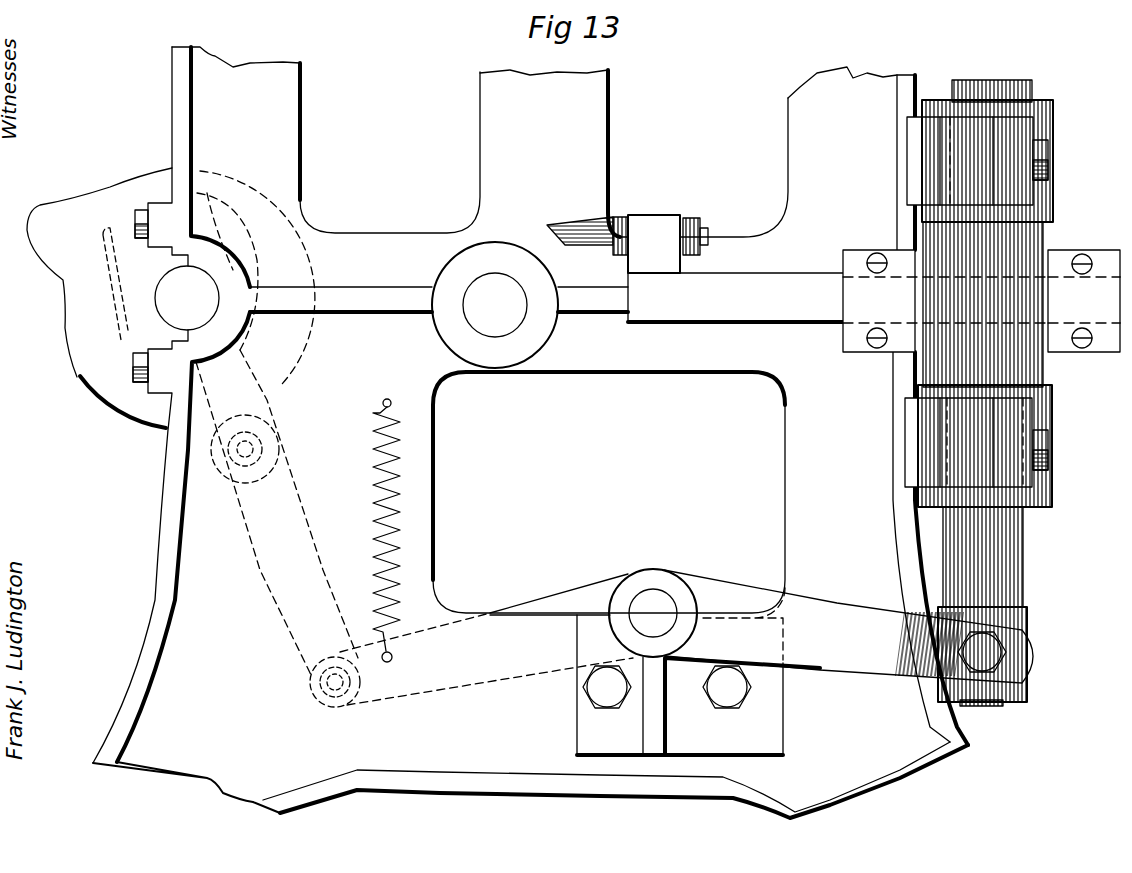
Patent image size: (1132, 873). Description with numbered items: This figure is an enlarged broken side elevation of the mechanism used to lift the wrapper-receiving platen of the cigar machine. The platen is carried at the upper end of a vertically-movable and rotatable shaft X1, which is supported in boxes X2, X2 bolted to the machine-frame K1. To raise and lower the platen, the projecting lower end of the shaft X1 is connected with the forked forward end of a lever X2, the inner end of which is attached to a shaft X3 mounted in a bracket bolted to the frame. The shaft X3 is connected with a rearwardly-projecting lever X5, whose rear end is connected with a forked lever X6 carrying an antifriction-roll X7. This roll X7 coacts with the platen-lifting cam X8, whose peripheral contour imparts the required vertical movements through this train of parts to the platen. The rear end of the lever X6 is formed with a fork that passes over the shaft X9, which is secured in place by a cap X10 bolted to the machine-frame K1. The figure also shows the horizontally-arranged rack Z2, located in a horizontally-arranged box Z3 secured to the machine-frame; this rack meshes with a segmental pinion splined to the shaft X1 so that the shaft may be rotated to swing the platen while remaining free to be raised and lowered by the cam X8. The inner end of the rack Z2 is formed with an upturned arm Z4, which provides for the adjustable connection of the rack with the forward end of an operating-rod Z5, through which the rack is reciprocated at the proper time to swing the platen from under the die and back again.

The machine-frame K1 is at (634, 153).
The vertically-movable and rotatable shaft X1 is at (978, 84).
The boxes / lever X2 is at (856, 400).
The shaft X3 is at (658, 610).
The rearwardly-projecting lever X5 is at (543, 603).
The forked lever X6 is at (278, 450).
The antifriction-roll X7 is at (268, 447).
The platen-lifting cam X8 is at (93, 393).
The shaft X9 is at (165, 301).
The cap X10 is at (127, 284).
The rack Z2 is at (874, 301).
The box Z3 is at (1062, 258).
The upturned arm Z4 is at (668, 244).
The operating-rod Z5 is at (575, 228).